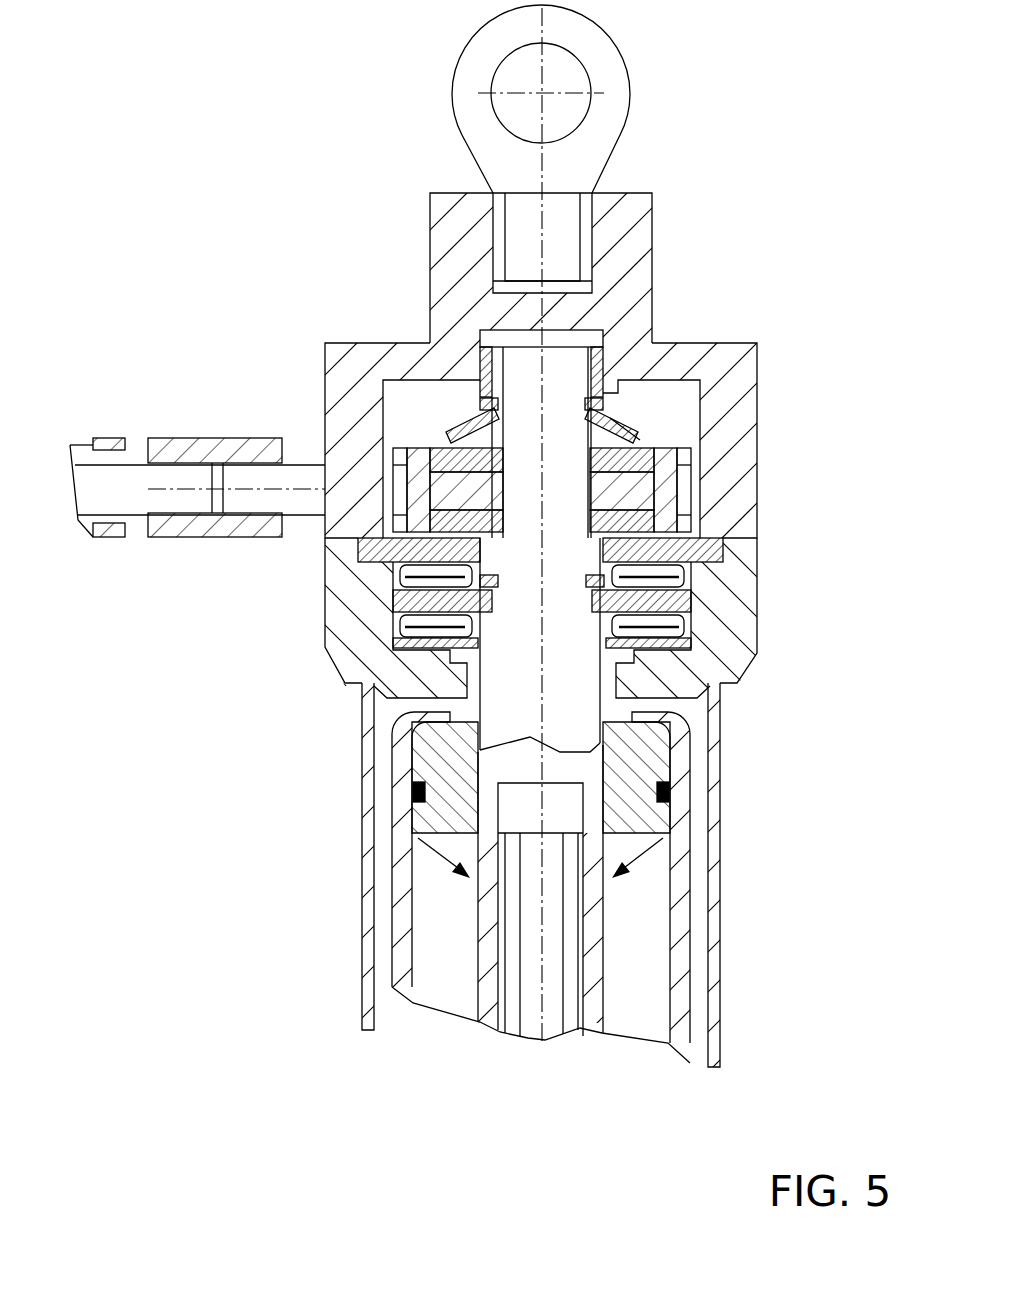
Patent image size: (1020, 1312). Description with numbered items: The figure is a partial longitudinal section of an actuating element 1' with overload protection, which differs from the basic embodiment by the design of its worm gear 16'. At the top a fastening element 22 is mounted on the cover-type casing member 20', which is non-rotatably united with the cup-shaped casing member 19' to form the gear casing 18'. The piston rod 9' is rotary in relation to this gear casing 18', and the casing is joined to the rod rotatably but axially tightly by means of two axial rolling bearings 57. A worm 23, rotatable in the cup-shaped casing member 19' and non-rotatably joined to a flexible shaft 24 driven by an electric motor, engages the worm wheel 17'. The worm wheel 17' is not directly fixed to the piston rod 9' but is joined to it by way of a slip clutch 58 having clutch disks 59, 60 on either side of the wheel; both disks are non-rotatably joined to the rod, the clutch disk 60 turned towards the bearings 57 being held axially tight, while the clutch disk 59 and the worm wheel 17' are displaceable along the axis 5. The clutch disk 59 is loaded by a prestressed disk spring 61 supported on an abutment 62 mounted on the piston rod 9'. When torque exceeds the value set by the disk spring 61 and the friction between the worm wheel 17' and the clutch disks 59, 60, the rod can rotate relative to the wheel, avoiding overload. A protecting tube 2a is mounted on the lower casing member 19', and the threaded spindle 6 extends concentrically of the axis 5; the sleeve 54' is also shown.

The fastening element 22 is at (610, 68).
The disk spring 61 is at (485, 396).
The abutment 62 is at (458, 427).
The sleeve 54' is at (650, 513).
The slip clutch 58 is at (651, 438).
The clutch disk 59 is at (453, 459).
The flexible shaft 24 is at (102, 493).
The worm 23 is at (387, 490).
The cover-type casing member 20' is at (510, 625).
The worm gear 16' is at (510, 625).
The worm wheel 17' is at (624, 490).
The clutch disk 60 is at (452, 515).
The axial rolling bearings 57 is at (393, 585).
The gear casing 18' is at (510, 625).
The central longitudinal axis 5 is at (540, 638).
The cup-shaped casing member 19' is at (510, 625).
The piston rod 9' is at (510, 625).
The protecting tube 2a is at (370, 920).
The actuating element 1' is at (510, 625).
The threaded spindle 6 is at (528, 1000).